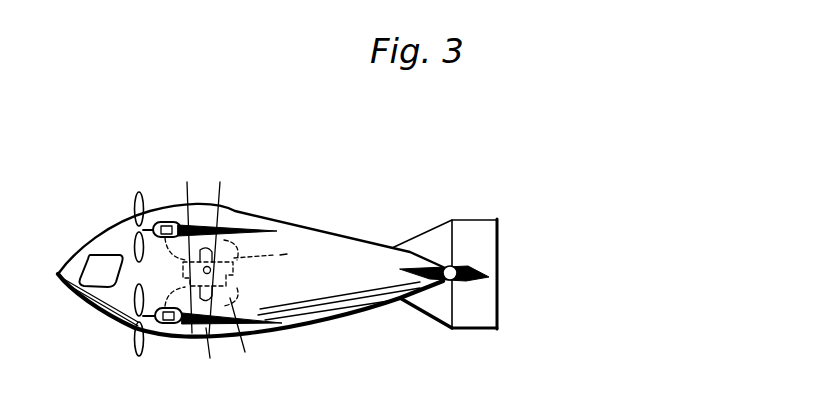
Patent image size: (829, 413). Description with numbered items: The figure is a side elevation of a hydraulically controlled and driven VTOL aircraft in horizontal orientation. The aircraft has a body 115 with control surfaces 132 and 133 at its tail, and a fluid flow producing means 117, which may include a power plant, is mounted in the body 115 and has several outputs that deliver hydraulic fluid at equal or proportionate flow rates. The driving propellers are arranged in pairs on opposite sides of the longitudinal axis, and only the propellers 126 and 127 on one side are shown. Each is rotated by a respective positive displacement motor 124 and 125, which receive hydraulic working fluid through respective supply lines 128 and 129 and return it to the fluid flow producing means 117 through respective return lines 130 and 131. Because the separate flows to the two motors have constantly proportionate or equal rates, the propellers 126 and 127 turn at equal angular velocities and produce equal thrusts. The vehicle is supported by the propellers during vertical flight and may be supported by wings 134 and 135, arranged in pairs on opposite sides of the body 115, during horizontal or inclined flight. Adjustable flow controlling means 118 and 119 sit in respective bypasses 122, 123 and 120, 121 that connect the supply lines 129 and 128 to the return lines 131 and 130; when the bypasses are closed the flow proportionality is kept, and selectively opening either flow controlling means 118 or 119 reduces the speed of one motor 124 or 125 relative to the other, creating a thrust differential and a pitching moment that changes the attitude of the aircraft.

The body 115 is at (312, 234).
The fluid flow producing means 117 is at (232, 268).
The adjustable flow controlling means 118 is at (248, 337).
The adjustable flow controlling means 119 is at (227, 248).
The bypass 120 is at (278, 253).
The bypass 121 is at (192, 248).
The bypass 122 is at (211, 355).
The bypass 123 is at (270, 327).
The positive displacement motor 124 is at (168, 230).
The positive displacement motor 125 is at (172, 326).
The propeller 126 is at (135, 206).
The propeller 127 is at (135, 342).
The supply line 128 is at (167, 254).
The supply line 129 is at (135, 308).
The return line 130 is at (230, 252).
The return line 131 is at (230, 297).
The control surface 132 is at (490, 233).
The control surface 133 is at (470, 270).
The wing 134 is at (220, 228).
The wing 135 is at (290, 320).